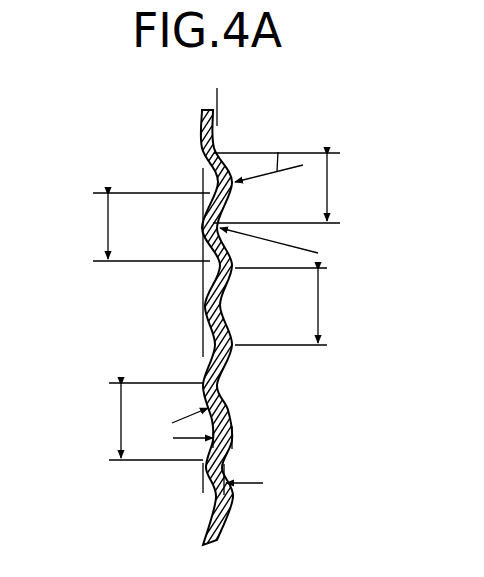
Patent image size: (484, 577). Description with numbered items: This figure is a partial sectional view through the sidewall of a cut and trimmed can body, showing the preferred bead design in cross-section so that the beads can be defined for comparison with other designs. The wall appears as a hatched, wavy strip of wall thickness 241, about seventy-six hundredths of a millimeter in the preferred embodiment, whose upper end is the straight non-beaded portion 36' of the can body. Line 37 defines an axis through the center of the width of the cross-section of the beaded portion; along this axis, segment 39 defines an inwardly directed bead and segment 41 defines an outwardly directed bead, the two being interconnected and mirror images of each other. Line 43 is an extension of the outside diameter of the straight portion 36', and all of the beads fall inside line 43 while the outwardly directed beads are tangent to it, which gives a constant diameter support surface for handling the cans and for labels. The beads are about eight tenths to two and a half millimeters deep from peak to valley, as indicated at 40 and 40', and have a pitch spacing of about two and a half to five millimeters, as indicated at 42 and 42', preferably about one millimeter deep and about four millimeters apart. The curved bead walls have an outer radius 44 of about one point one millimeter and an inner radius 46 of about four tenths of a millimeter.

The non-beaded portion 36' is at (186, 306).
The line 37 is at (217, 108).
The line 43 is at (197, 182).
The segment 41 is at (108, 228).
The outer radius 44 is at (278, 152).
The segment 39 is at (328, 190).
The inner radius 46 is at (318, 253).
The pitch spacing 42' is at (309, 306).
The pitch spacing 42 is at (136, 416).
The wall thickness 241 is at (228, 395).
The bead depth 40' is at (243, 438).
The bead depth 40 is at (199, 481).